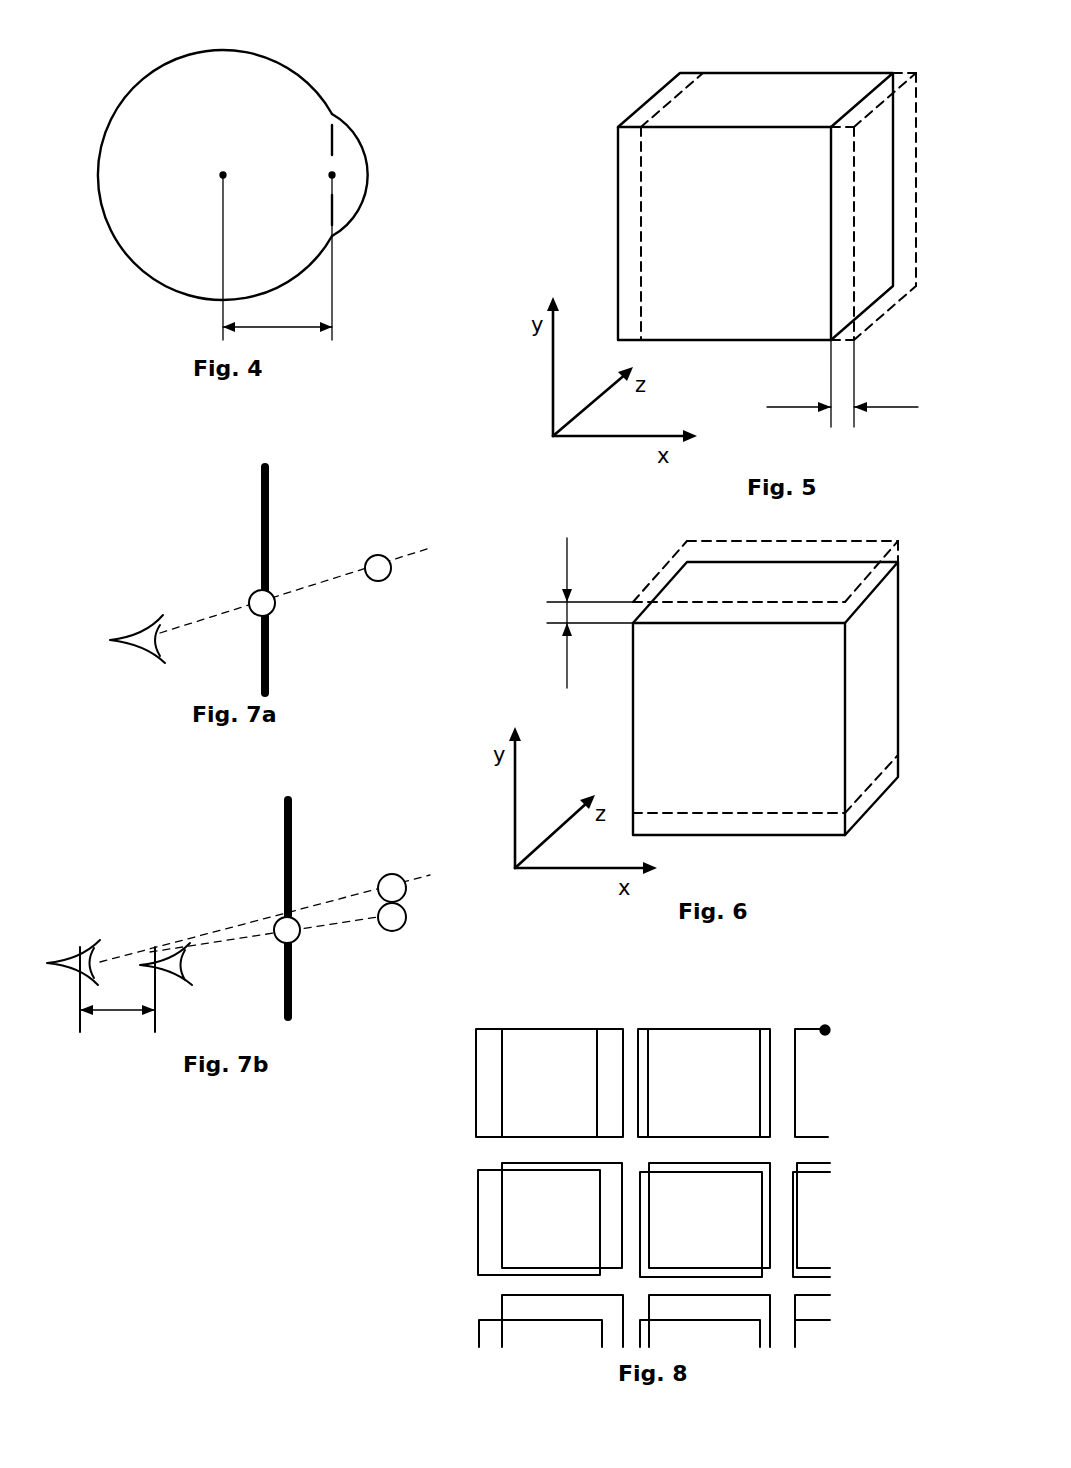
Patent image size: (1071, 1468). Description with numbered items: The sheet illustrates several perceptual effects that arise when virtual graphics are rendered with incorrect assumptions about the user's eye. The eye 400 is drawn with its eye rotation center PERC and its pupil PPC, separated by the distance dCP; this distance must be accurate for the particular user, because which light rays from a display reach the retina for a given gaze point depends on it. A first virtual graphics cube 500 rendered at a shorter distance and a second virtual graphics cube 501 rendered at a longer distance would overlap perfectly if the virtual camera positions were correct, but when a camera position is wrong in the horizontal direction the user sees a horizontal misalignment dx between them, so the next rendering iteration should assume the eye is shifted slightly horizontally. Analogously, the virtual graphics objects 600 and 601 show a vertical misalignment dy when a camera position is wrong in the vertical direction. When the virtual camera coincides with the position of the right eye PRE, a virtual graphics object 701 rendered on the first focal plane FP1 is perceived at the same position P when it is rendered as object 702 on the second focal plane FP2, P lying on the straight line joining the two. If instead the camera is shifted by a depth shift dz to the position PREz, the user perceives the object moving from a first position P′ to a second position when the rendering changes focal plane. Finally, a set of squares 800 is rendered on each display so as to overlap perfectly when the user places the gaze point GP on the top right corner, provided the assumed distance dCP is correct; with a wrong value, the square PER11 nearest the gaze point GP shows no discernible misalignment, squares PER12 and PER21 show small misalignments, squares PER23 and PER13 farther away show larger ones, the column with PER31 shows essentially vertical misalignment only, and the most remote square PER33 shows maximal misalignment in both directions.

In FIG. 4, the eye 400 is at (302, 62).
In FIG. 4, the eye rotation center PERC is at (223, 175).
In FIG. 4, the pupil PPC is at (332, 175).
In FIG. 4, the distance between eye rotation center and pupil dCP is at (277, 316).
In FIG. 5, the first virtual graphics cube 500 is at (653, 97).
In FIG. 5, the second virtual graphics cube 501 is at (638, 215).
In FIG. 5, the horizontal misalignment dx is at (842, 398).
In FIG. 6, the virtual graphics object 600 is at (762, 837).
In FIG. 6, the virtual graphics object 601 is at (817, 815).
In FIG. 6, the vertical misalignment dy is at (578, 613).
In FIG. 7A, the first focal plane FP1 is at (233, 495).
In FIG. 7B, the first focal plane FP1 is at (238, 835).
In FIG. 7A, the second focal plane FP2 is at (413, 492).
In FIG. 7B, the second focal plane FP2 is at (413, 830).
In FIG. 7A, the virtual graphics object 701 is at (233, 577).
In FIG. 7B, the virtual graphics object 701 is at (238, 902).
In FIG. 7A, the virtual graphics object 702 is at (413, 517).
In FIG. 7B, the virtual graphics object 702 is at (413, 848).
In FIG. 7A, the position P is at (325, 548).
In FIG. 7B, the first position P′ is at (327, 893).
In FIG. 7A, the position of the user's right eye PRE is at (147, 593).
In FIG. 7B, the virtual camera position shifted in depth direction PREz is at (77, 922).
In FIG. 7B, the depth shift dz is at (117, 999).
In FIG. 8, the squares 800 is at (530, 1000).
In FIG. 8, the square PER11 is at (795, 1030).
In FIG. 8, the square PER12 is at (682, 1030).
In FIG. 8, the square PER13 is at (475, 1072).
In FIG. 8, the square PER21 is at (830, 1172).
In FIG. 8, the square PER23 is at (478, 1183).
In FIG. 8, the square PER31 is at (828, 1293).
In FIG. 8, the square PER33 is at (478, 1303).
In FIG. 8, the gaze point GP is at (828, 1029).